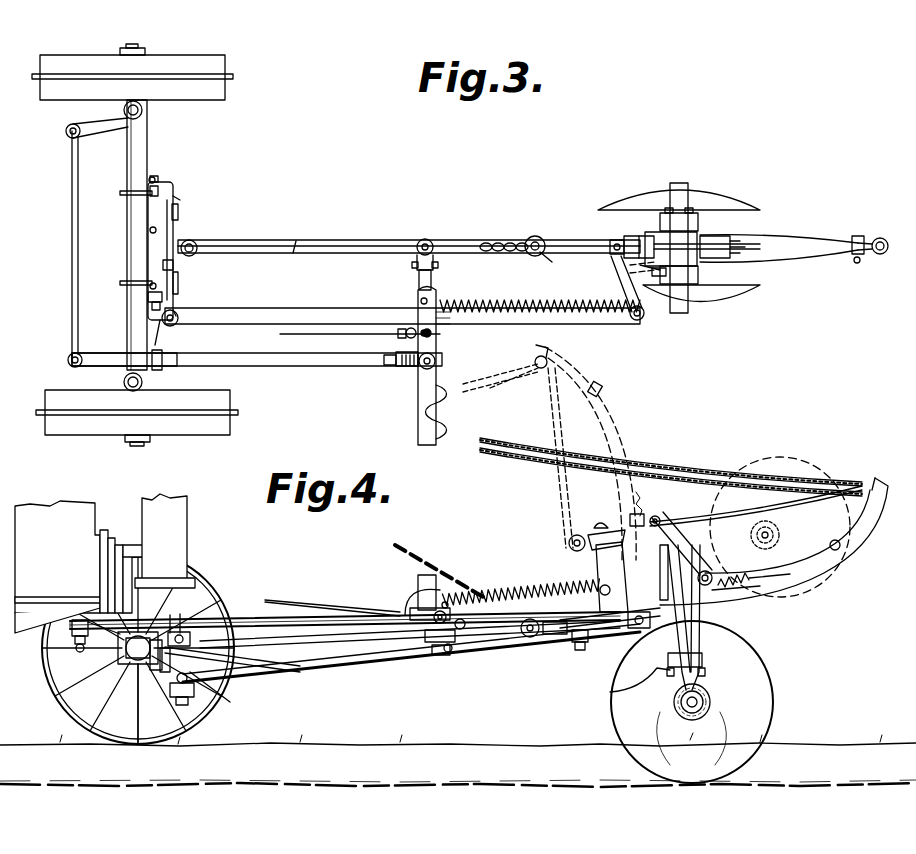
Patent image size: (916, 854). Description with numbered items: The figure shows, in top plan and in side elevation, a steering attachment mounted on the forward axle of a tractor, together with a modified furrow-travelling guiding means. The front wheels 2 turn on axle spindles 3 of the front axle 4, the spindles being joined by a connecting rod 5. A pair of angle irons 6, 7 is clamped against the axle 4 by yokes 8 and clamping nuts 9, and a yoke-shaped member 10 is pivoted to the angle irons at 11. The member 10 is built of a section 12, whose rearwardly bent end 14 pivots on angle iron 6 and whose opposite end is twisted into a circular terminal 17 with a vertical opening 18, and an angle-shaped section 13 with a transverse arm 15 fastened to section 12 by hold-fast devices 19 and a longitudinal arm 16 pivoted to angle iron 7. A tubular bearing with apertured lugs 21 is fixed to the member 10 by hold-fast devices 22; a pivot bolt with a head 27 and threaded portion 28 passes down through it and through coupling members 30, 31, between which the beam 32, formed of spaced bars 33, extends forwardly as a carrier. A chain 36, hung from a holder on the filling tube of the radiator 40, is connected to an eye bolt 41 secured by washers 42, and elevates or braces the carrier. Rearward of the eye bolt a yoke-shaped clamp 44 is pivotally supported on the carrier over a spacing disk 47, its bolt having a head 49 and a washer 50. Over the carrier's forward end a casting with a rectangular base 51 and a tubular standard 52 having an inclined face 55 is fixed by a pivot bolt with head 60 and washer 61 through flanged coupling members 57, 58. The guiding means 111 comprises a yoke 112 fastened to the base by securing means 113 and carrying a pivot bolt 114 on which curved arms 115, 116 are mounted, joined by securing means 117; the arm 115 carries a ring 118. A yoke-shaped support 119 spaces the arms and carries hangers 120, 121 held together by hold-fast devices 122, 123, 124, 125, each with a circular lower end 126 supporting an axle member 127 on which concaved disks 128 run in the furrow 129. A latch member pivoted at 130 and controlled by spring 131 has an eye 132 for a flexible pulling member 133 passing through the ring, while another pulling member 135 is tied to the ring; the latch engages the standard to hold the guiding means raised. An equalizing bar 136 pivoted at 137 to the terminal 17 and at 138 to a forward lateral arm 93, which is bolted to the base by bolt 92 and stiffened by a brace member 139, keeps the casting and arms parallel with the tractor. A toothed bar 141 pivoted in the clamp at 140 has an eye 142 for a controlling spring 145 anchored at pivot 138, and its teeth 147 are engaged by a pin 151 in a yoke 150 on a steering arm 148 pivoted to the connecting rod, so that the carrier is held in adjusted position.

In FIG. 3, the front wheels 2 is at (60, 60).
In FIG. 4, the front wheels 2 is at (44, 690).
In FIG. 3, the axle spindles 3 is at (100, 130).
In FIG. 4, the axle spindles 3 is at (103, 632).
In FIG. 3, the front axle 4 is at (150, 150).
In FIG. 4, the front axle 4 is at (125, 664).
In FIG. 3, the connecting rod 5 is at (72, 227).
In FIG. 4, the connecting rod 5 is at (75, 634).
In FIG. 3, the angle iron 6 is at (138, 212).
In FIG. 3, the angle iron 7 is at (145, 298).
In FIG. 4, the angle iron 7 is at (163, 672).
In FIG. 3, the yokes 8 is at (130, 196).
In FIG. 4, the yokes 8 is at (120, 660).
In FIG. 3, the clamping nuts 9 is at (160, 190).
In FIG. 3, the yoke-shaped member 10 is at (180, 200).
In FIG. 3, the pivotal connection 11 is at (155, 178).
In FIG. 3, the section 12 is at (180, 208).
In FIG. 3, the section 13 is at (158, 333).
In FIG. 3, the rearwardly bent end 14 is at (170, 183).
In FIG. 3, the transversely disposed arm 15 is at (180, 283).
In FIG. 3, the longitudinally extending arm 16 is at (145, 300).
In FIG. 4, the longitudinally extending arm 16 is at (152, 665).
In FIG. 3, the circular terminal 17 is at (182, 310).
In FIG. 3, the vertically disposed opening 18 is at (176, 325).
In FIG. 3, the hold-fast devices 19 is at (160, 288).
In FIG. 3, the apertured lugs 21 is at (158, 239).
In FIG. 3, the hold-fast devices 22 is at (174, 265).
In FIG. 3, the head 27 is at (200, 242).
In FIG. 4, the head 27 is at (190, 700).
In FIG. 4, the threaded lower terminal portion 28 is at (196, 656).
In FIG. 4, the coupling member 30 is at (232, 694).
In FIG. 3, the coupling member 31 is at (124, 351).
In FIG. 4, the coupling member 31 is at (180, 700).
In FIG. 3, the beam 32 is at (362, 238).
In FIG. 4, the beam 32 is at (312, 672).
In FIG. 3, the spaced bars 33 is at (295, 253).
In FIG. 3, the chain 36 is at (504, 237).
In FIG. 4, the chain 36 is at (425, 560).
In FIG. 4, the radiator 40 is at (187, 533).
In FIG. 3, the eye bolt 41 is at (552, 264).
In FIG. 4, the eye bolt 41 is at (553, 636).
In FIG. 3, the washers 42 is at (538, 236).
In FIG. 4, the washers 42 is at (527, 640).
In FIG. 3, the yoke-shaped clamp 44 is at (425, 240).
In FIG. 4, the spacing disk 47 is at (452, 655).
In FIG. 3, the head 49 is at (428, 239).
In FIG. 4, the head 49 is at (430, 600).
In FIG. 4, the washer 50 is at (438, 660).
In FIG. 4, the rectangular base 51 is at (715, 590).
In FIG. 3, the tubular standard 52 is at (628, 236).
In FIG. 4, the tubular standard 52 is at (600, 561).
In FIG. 4, the inclined face 55 is at (567, 540).
In FIG. 4, the flanged coupling member 57 is at (580, 644).
In FIG. 4, the flanged coupling member 58 is at (598, 650).
In FIG. 4, the head 60 is at (605, 525).
In FIG. 4, the washer 61 is at (600, 528).
In FIG. 3, the bolt 92 is at (614, 240).
In FIG. 3, the forward lateral arm 93 is at (618, 270).
In FIG. 4, the forward lateral arm 93 is at (607, 620).
In FIG. 3, the guiding means 111 is at (690, 212).
In FIG. 4, the guiding means 111 is at (718, 636).
In FIG. 3, the yoke 112 is at (648, 215).
In FIG. 4, the securing means 113 is at (640, 630).
In FIG. 3, the pivot bolt 114 is at (644, 267).
In FIG. 3, the arm 115 is at (790, 236).
In FIG. 3, the arm 116 is at (805, 262).
In FIG. 4, the arm 116 is at (630, 428).
In FIG. 3, the securing means 117 is at (857, 263).
In FIG. 3, the ring 118 is at (880, 238).
In FIG. 3, the yoke-shaped support 119 is at (680, 188).
In FIG. 4, the yoke-shaped support 119 is at (690, 545).
In FIG. 3, the yoke-shaped hanger 120 is at (698, 222).
In FIG. 3, the yoke-shaped hanger 121 is at (698, 275).
In FIG. 4, the hold-fast device 122 is at (690, 562).
In FIG. 4, the hold-fast device 123 is at (712, 594).
In FIG. 4, the hold-fast device 124 is at (705, 654).
In FIG. 4, the hold-fast device 125 is at (705, 672).
In FIG. 4, the circular lower end 126 is at (710, 703).
In FIG. 4, the axle member 127 is at (690, 710).
In FIG. 3, the concaved disk 128 is at (635, 195).
In FIG. 4, the concaved disk 128 is at (842, 585).
In FIG. 4, the furrow 129 is at (578, 502).
In FIG. 4, the pivot 130 is at (725, 565).
In FIG. 3, the controlling spring 131 is at (732, 247).
In FIG. 4, the controlling spring 131 is at (752, 580).
In FIG. 4, the eye 132 is at (648, 520).
In FIG. 4, the flexible pulling member 133 is at (548, 432).
In FIG. 4, the flexible pulling member 135 is at (490, 385).
In FIG. 3, the equalizing bar 136 is at (270, 308).
In FIG. 4, the equalizing bar 136 is at (332, 646).
In FIG. 3, the pivotal connection 137 is at (285, 334).
In FIG. 4, the pivotal connection 137 is at (192, 638).
In FIG. 3, the pivotal connection 138 is at (636, 322).
In FIG. 4, the pivotal connection 138 is at (610, 583).
In FIG. 3, the brace member 139 is at (652, 276).
In FIG. 4, the brace member 139 is at (640, 683).
In FIG. 3, the pivot 140 is at (419, 281).
In FIG. 4, the pivot 140 is at (440, 590).
In FIG. 3, the toothed bar 141 is at (437, 333).
In FIG. 4, the toothed bar 141 is at (432, 645).
In FIG. 3, the eye 142 is at (436, 300).
In FIG. 4, the eye 142 is at (448, 612).
In FIG. 3, the controlling spring 145 is at (518, 306).
In FIG. 4, the controlling spring 145 is at (527, 585).
In FIG. 3, the teeth 147 is at (437, 415).
In FIG. 3, the steering arm 148 is at (300, 368).
In FIG. 4, the steering arm 148 is at (280, 622).
In FIG. 3, the yoke 150 is at (410, 366).
In FIG. 4, the yoke 150 is at (418, 600).
In FIG. 3, the pin 151 is at (436, 362).
In FIG. 4, the pin 151 is at (465, 630).